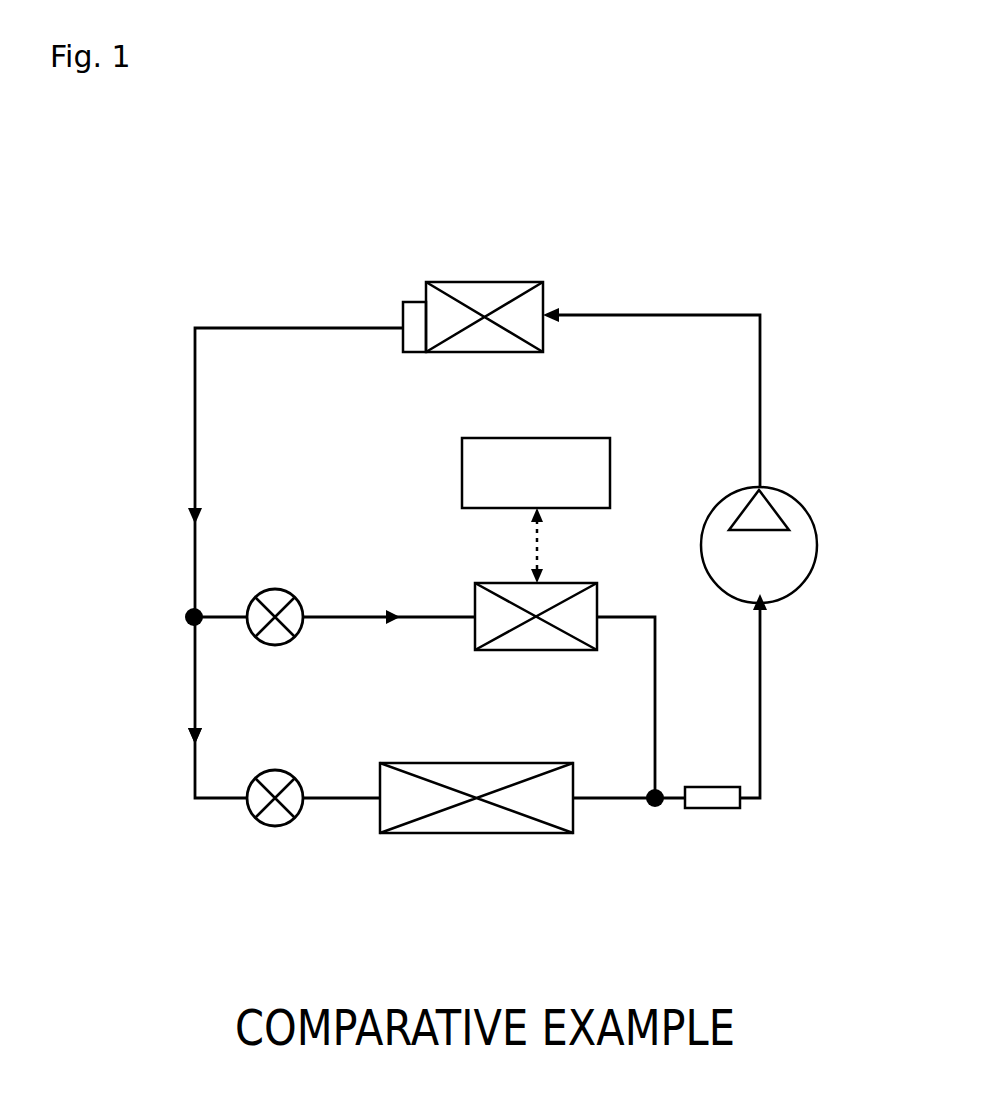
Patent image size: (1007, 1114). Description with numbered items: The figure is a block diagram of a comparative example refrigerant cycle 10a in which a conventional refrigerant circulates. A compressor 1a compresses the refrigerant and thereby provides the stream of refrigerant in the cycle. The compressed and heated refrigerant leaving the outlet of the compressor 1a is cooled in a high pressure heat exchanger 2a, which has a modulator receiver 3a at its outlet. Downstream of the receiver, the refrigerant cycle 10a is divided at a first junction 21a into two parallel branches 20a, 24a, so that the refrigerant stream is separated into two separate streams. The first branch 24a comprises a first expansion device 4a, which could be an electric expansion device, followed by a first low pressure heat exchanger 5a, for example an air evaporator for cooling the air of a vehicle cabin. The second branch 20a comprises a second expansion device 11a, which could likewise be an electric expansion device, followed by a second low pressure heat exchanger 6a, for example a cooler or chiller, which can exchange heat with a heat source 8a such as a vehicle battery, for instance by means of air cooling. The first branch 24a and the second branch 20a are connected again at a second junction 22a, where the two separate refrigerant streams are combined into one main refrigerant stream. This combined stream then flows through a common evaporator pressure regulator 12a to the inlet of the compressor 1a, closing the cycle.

The compressor 1a is at (765, 582).
The high pressure heat exchanger 2a is at (473, 293).
The modulator receiver 3a is at (412, 296).
The first expansion device 4a is at (270, 815).
The first low pressure heat exchanger 5a is at (470, 818).
The second low pressure heat exchanger 6a is at (580, 607).
The heat source 8a is at (592, 466).
The refrigerant cycle 10a is at (710, 245).
The second expansion device 11a is at (273, 603).
The common evaporator pressure regulator 12a is at (700, 797).
The second branch 20a is at (392, 642).
The first junction 21a is at (188, 623).
The second junction 22a is at (647, 806).
The first branch 24a is at (148, 795).